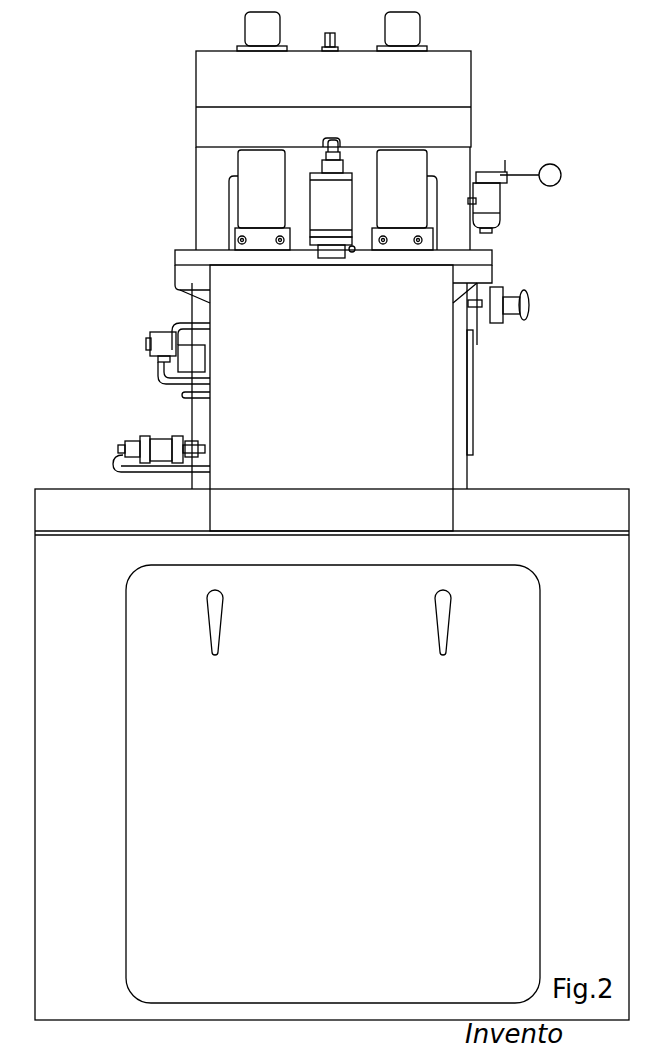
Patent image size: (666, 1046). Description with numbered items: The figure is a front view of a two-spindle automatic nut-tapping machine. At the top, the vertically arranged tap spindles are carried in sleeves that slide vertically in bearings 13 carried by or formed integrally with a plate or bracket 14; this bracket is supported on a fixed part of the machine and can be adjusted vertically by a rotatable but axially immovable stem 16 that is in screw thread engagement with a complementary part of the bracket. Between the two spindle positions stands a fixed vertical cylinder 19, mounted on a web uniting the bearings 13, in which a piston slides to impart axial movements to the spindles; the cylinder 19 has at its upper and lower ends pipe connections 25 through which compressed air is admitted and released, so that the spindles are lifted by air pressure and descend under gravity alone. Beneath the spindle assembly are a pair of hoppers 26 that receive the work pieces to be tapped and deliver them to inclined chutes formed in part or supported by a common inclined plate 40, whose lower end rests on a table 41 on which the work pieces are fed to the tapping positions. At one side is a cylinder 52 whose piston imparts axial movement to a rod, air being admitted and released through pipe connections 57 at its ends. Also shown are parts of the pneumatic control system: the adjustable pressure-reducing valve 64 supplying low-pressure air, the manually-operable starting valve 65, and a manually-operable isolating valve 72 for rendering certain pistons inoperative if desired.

The bearings 13 is at (238, 239).
The plate or bracket 14 is at (231, 179).
The stem 16 is at (337, 38).
The cylinder 19 is at (340, 200).
The pipe connections 25 is at (340, 141).
The hoppers 26 is at (183, 266).
The inclined plate 40 is at (440, 474).
The table 41 is at (567, 493).
The cylinder 52 is at (167, 440).
The pipe connections 57 is at (121, 448).
The pressure-reducing valve 64 is at (505, 322).
The starting valve 65 is at (495, 212).
The isolating valve 72 is at (474, 352).